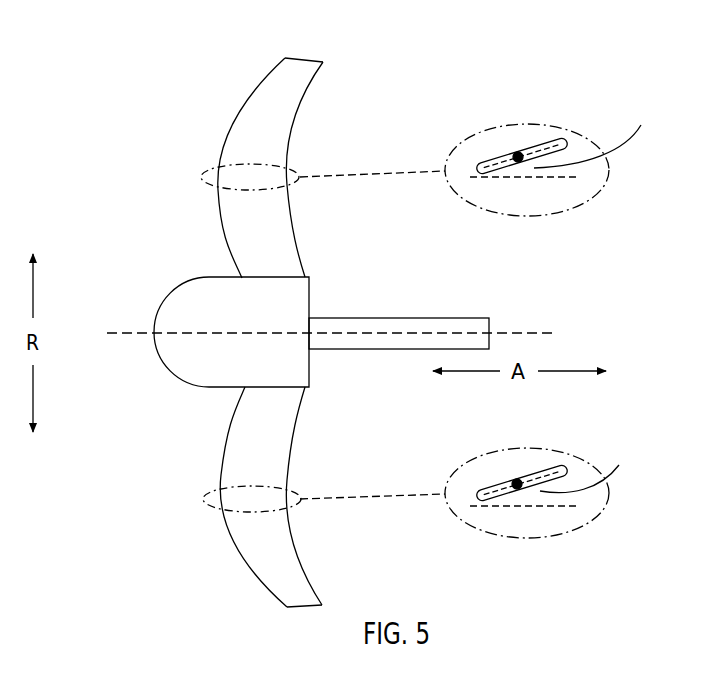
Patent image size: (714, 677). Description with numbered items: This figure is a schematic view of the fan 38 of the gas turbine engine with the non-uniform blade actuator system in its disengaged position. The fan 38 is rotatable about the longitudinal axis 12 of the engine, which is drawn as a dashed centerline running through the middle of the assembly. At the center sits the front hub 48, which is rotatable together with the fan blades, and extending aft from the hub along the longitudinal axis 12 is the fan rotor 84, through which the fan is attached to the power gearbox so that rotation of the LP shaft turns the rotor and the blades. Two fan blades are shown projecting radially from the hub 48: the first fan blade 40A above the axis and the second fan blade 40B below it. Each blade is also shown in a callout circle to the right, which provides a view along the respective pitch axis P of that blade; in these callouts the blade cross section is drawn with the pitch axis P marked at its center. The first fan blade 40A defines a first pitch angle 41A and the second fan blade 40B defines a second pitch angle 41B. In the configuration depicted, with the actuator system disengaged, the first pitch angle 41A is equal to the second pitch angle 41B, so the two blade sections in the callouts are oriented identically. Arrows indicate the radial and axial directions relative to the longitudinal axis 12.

The longitudinal axis 12 is at (131, 333).
The fan 38 is at (131, 149).
The first fan blade 40A is at (272, 90).
The second fan blade 40B is at (305, 588).
The first pitch angle 41A is at (598, 135).
The second pitch angle 41B is at (589, 467).
The front hub 48 is at (172, 373).
The fan rotor 84 is at (406, 318).
The pitch axis P is at (517, 153).